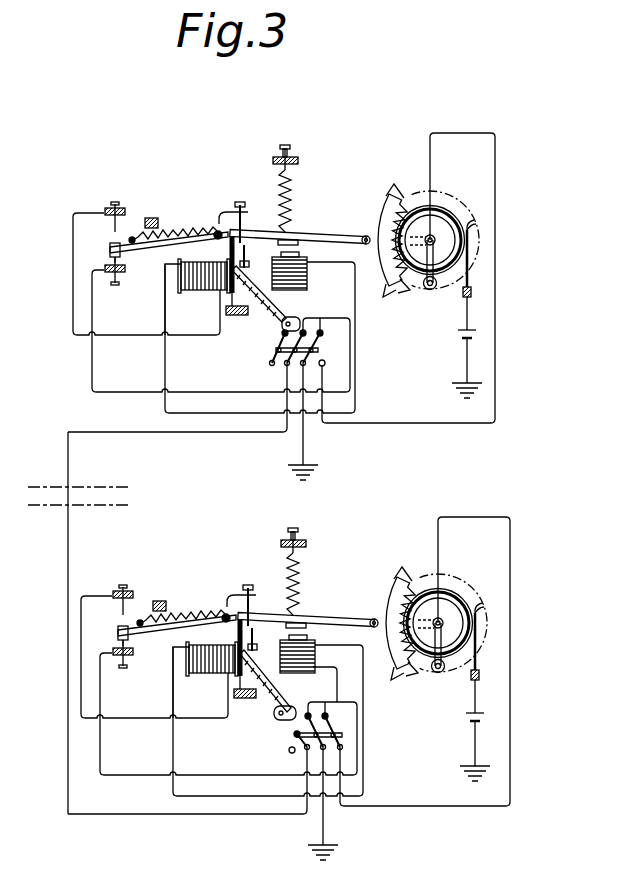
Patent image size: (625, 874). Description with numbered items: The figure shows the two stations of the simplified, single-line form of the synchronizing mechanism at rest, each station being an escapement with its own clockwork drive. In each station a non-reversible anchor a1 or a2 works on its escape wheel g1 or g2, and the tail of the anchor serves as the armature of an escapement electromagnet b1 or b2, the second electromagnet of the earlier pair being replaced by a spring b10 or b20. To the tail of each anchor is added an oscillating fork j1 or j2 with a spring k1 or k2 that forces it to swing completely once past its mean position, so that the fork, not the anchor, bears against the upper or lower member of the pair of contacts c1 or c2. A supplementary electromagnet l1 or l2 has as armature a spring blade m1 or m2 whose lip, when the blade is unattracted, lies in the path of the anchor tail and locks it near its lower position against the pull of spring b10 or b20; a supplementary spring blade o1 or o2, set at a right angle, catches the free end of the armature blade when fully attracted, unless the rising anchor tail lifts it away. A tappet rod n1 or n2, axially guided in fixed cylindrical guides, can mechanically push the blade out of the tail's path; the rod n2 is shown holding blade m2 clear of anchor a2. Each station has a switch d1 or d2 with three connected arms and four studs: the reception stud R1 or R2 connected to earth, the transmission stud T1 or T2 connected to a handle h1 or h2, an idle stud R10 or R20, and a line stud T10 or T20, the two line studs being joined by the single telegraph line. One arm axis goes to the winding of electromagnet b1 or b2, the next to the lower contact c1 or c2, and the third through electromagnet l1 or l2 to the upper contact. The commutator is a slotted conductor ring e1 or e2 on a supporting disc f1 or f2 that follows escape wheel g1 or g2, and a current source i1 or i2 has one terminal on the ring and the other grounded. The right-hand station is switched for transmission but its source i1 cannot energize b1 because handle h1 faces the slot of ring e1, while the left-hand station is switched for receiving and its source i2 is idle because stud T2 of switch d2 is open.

The supporting disc f2 is at (430, 215).
The escape wheel g2 is at (426, 288).
The conductor ring e2 is at (468, 228).
The handle h2 is at (461, 336).
The source of current i2 is at (459, 364).
The anchor a2 is at (360, 240).
The spring b20 is at (294, 200).
The escapement electromagnet b2 is at (307, 280).
The spring blade m2 is at (231, 301).
The supplementary spring blade o2 is at (222, 244).
The tappet rod n2 is at (285, 320).
The switch d2 is at (284, 354).
The transmission contact stud T2 is at (324, 363).
The reception contact stud R2 is at (322, 371).
The idle stud R20 is at (275, 364).
The line stud T20 is at (268, 400).
The spring k2 is at (144, 234).
The oscillating fork j2 is at (127, 252).
The contacts c2 is at (104, 262).
The supplementary electromagnet l2 is at (168, 289).
The supporting disc f1 is at (436, 595).
The escape wheel g1 is at (428, 670).
The conductor ring e1 is at (477, 611).
The handle h1 is at (461, 719).
The source of current i1 is at (476, 713).
The anchor a1 is at (360, 623).
The spring b10 is at (296, 583).
The escapement electromagnet b1 is at (315, 654).
The spring blade m1 is at (231, 679).
The supplementary spring blade o1 is at (224, 624).
The tappet rod n1 is at (287, 704).
The switch d1 is at (292, 732).
The transmission contact stud T1 is at (328, 738).
The reception contact stud R1 is at (320, 744).
The idle stud R10 is at (292, 750).
The line stud T10 is at (304, 790).
The spring k1 is at (144, 617).
The oscillating fork j1 is at (131, 634).
The contacts c1 is at (109, 637).
The supplementary electromagnet l1 is at (170, 669).